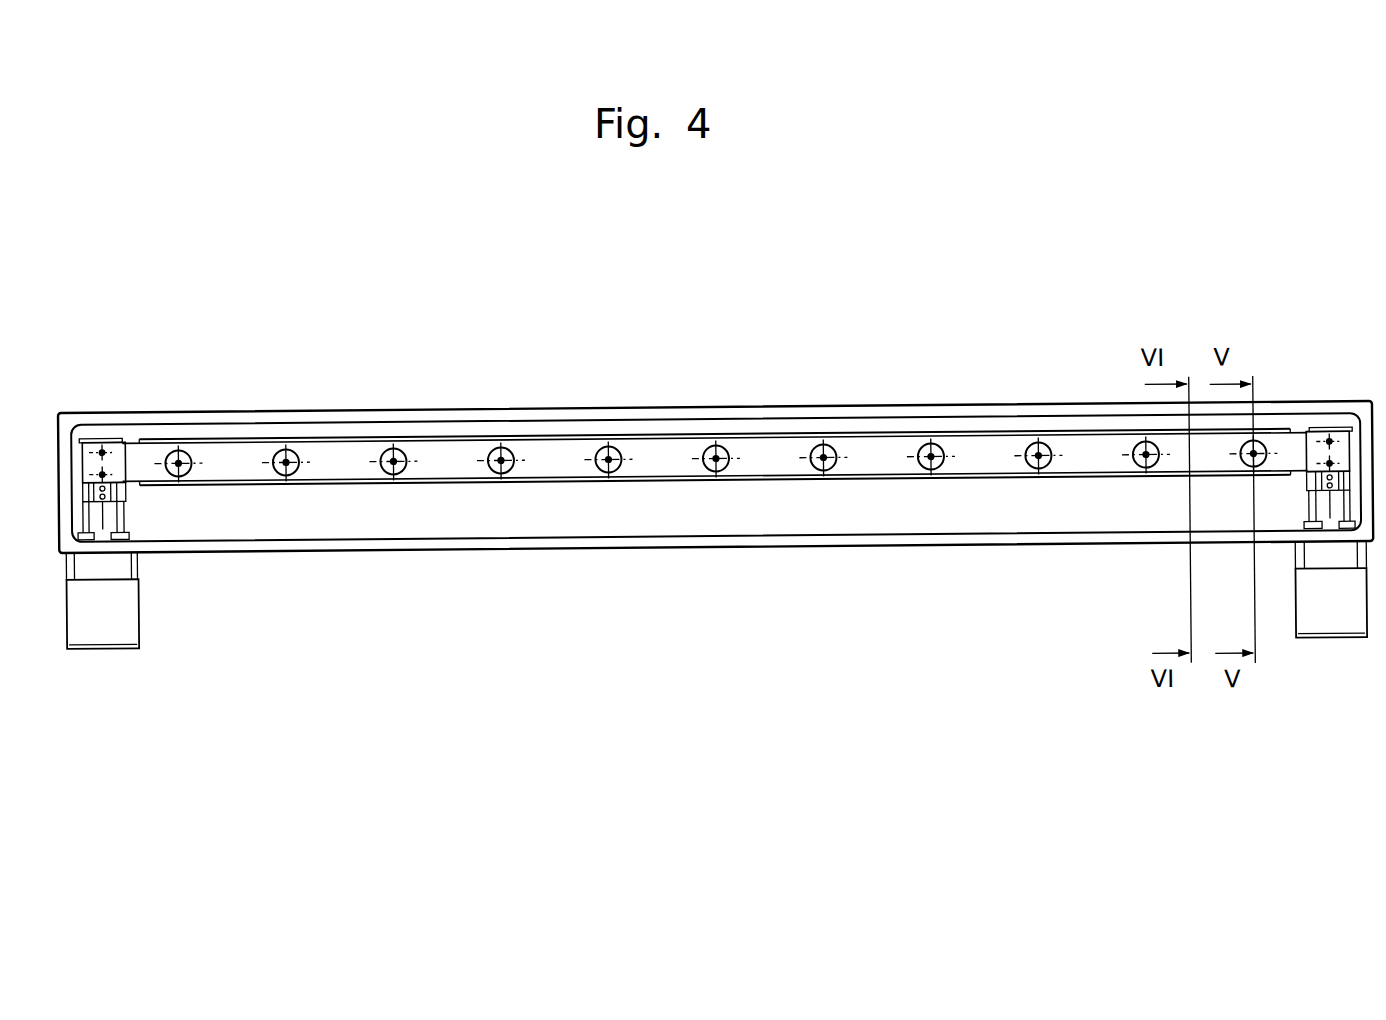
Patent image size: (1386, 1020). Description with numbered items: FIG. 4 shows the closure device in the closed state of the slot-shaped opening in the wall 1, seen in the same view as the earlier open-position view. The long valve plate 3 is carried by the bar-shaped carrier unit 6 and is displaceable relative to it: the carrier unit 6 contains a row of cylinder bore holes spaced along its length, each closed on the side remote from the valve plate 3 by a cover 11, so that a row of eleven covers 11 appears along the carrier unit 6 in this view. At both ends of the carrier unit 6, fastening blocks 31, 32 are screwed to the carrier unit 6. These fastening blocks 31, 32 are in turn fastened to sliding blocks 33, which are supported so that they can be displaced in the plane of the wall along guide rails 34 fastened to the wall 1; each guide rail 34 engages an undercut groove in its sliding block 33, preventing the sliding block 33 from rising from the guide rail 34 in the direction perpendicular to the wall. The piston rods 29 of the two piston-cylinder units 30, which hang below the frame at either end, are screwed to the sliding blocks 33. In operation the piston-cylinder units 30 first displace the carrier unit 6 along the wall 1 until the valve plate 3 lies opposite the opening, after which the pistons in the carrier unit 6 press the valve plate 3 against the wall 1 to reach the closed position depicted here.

The wall 1 is at (655, 534).
The valve plate 3 is at (762, 486).
The carrier unit 6 is at (868, 484).
The cover 11 is at (722, 451).
The piston rod 29 is at (98, 530).
The piston-cylinder unit 30 is at (152, 644).
The fastening block 31 is at (112, 460).
The fastening block 32 is at (1338, 455).
The sliding block 33 is at (125, 499).
The guide rail 34 is at (115, 518).